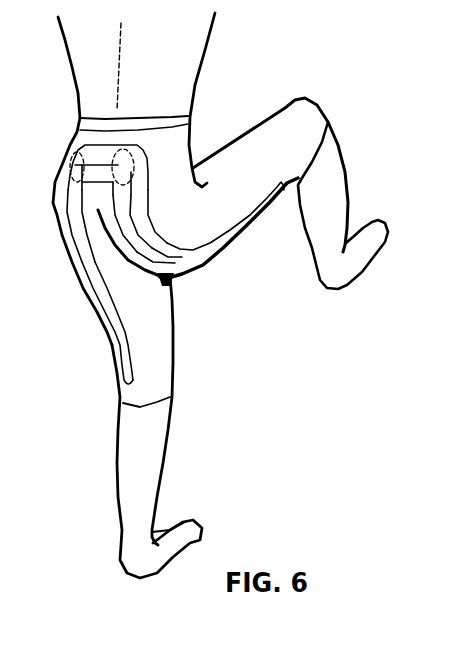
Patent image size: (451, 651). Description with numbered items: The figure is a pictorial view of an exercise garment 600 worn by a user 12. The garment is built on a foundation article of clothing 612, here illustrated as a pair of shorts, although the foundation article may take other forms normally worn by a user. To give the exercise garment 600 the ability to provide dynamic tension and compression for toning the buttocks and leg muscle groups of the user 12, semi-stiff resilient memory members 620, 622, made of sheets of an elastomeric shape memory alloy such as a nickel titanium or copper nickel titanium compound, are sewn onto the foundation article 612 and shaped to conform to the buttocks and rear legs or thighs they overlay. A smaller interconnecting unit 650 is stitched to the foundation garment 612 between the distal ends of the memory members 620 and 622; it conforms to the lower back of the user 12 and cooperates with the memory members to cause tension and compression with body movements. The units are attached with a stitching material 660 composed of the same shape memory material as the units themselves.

The user 12 is at (175, 38).
The exercise garment 600 is at (262, 97).
The foundation article of clothing 612 is at (160, 370).
The semi-stiff resilient memory member 620 is at (120, 373).
The semi-stiff resilient memory member 622 is at (219, 240).
The interconnecting unit 650 is at (88, 152).
The stitching material 660 is at (67, 205).